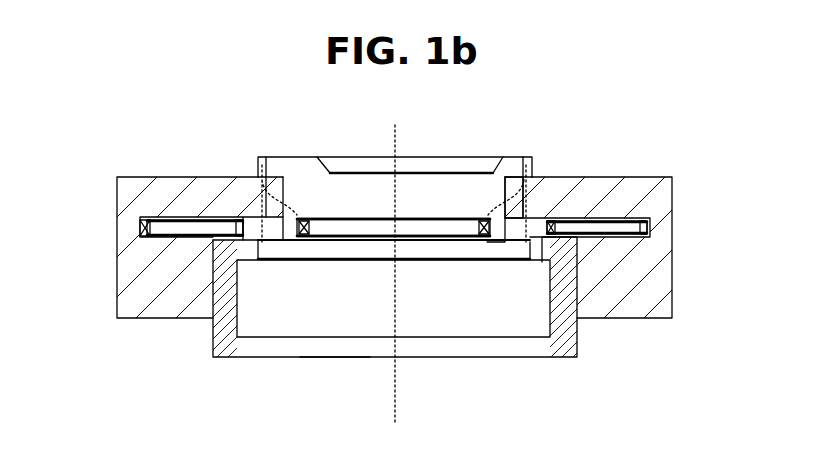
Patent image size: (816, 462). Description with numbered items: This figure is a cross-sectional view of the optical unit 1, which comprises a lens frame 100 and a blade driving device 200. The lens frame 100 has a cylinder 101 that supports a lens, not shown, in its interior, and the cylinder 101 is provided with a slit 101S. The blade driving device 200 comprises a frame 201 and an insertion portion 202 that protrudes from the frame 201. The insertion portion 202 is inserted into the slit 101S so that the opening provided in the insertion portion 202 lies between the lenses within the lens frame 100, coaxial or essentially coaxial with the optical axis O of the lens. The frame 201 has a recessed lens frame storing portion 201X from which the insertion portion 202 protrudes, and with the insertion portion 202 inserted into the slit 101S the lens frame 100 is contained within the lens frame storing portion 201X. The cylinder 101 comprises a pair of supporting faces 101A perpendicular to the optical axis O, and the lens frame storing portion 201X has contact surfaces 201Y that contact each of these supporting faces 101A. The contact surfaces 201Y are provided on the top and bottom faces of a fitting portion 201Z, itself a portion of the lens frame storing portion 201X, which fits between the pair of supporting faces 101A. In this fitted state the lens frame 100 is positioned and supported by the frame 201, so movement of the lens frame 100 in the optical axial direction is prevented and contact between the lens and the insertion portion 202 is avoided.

The optical unit 1 is at (699, 120).
The lens frame 100 is at (495, 151).
The cylinder 101 is at (578, 343).
The supporting faces 101A is at (247, 199).
The slit 101S is at (333, 357).
The blade driving device 200 is at (679, 255).
The frame 201 is at (643, 180).
The lens frame storing portion 201X is at (300, 218).
The contact surfaces 201Y is at (262, 165).
The fitting portion 201Z is at (393, 163).
The insertion portion 202 is at (438, 259).
The optical axis O is at (393, 410).